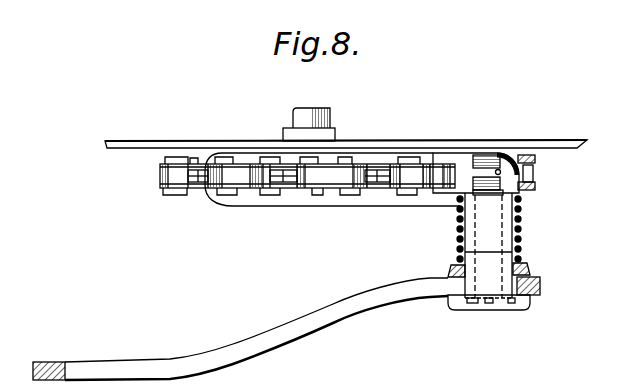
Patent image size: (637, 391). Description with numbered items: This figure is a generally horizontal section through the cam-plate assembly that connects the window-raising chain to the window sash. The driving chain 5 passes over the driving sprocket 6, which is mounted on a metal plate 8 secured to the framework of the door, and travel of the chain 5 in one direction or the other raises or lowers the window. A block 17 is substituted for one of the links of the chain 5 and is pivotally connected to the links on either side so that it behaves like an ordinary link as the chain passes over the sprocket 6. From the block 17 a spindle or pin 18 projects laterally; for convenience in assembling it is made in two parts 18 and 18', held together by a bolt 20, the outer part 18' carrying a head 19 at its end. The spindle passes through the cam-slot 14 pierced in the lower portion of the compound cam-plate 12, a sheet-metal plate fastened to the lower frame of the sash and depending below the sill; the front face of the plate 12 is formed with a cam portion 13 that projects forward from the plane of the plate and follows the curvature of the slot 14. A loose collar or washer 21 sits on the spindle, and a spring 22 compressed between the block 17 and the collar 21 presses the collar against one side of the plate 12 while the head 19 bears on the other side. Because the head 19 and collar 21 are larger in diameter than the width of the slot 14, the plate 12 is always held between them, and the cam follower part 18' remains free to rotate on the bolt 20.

The driving chain 5 is at (335, 172).
The driving sprocket 6 is at (280, 180).
The metal plate 8 is at (133, 148).
The compound cam-plate 12 is at (540, 292).
The cam portion 13 is at (225, 357).
The cam-slot 14 is at (372, 293).
The block 17 is at (460, 163).
The spindle or pin 18 is at (514, 245).
The cam follower part of the spindle 18' is at (524, 246).
The head 19 is at (521, 303).
The bolt 20 is at (480, 285).
The collar or washer 21 is at (530, 271).
The spring 22 is at (458, 224).